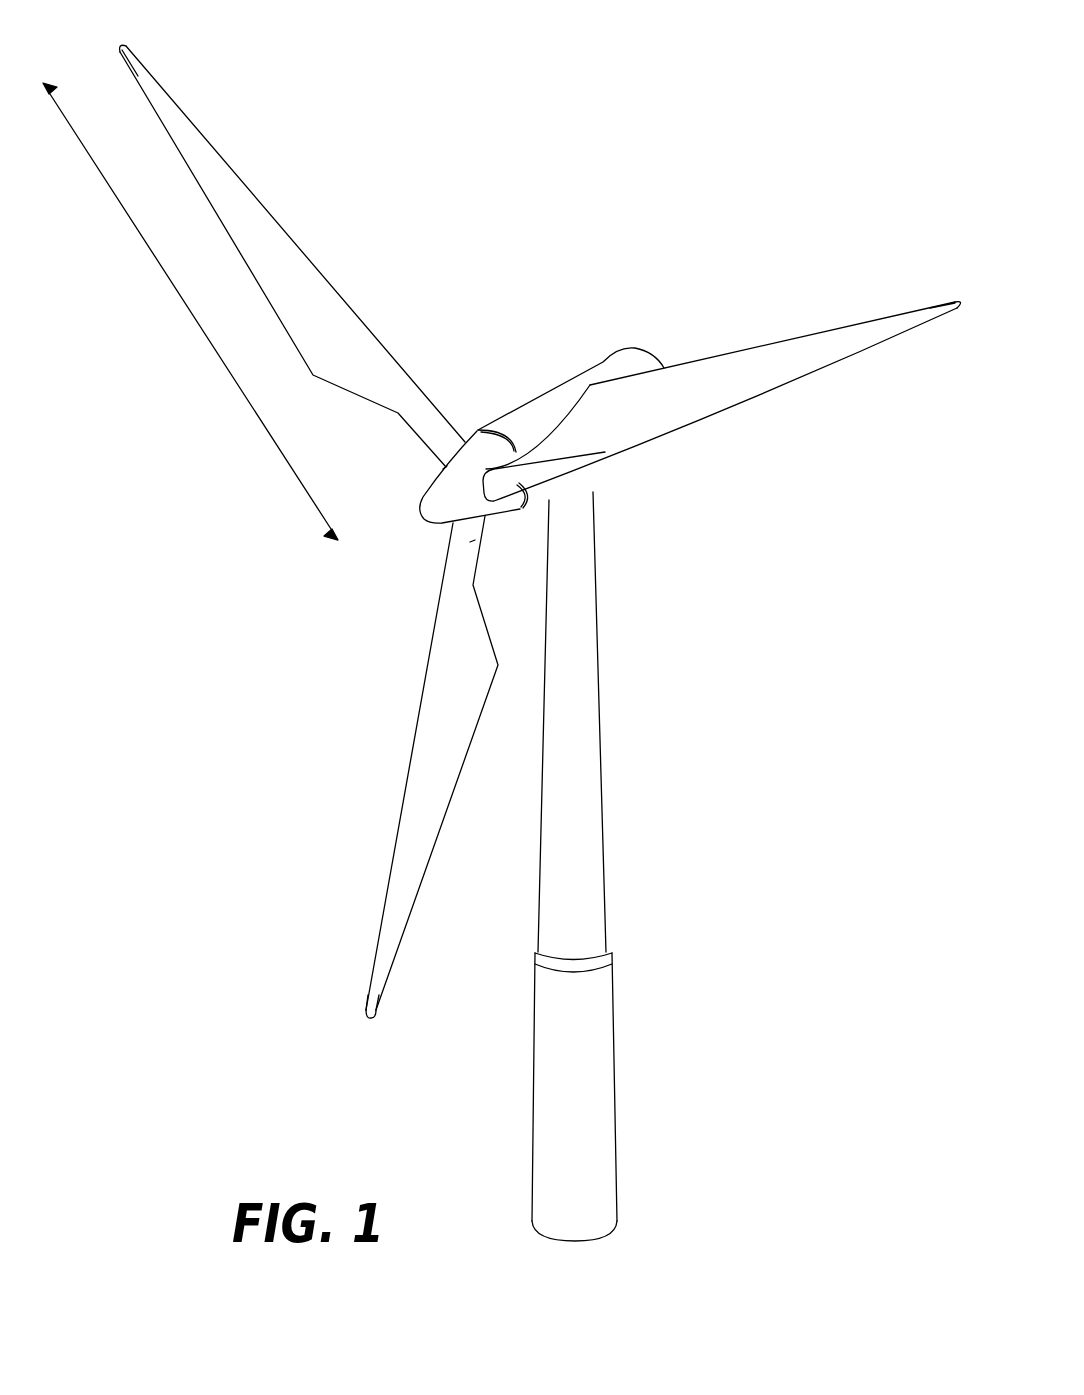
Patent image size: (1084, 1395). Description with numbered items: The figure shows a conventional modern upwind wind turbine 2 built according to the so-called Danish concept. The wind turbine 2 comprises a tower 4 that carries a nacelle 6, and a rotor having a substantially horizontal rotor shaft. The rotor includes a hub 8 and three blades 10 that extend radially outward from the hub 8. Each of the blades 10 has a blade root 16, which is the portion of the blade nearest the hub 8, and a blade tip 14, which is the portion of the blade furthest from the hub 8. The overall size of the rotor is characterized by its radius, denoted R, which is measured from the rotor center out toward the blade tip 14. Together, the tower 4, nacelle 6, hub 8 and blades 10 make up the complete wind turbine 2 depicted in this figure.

The wind turbine 2 is at (703, 792).
The tower 4 is at (593, 710).
The nacelle 6 is at (533, 408).
The hub 8 is at (441, 494).
The blades 10 is at (325, 347).
The blade tip 14 is at (163, 102).
The blade root 16 is at (441, 452).
The rotor radius R is at (200, 327).